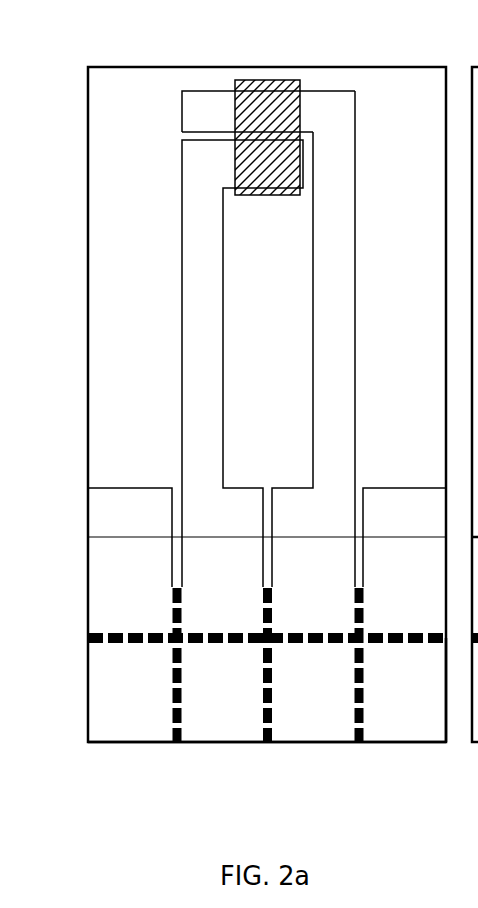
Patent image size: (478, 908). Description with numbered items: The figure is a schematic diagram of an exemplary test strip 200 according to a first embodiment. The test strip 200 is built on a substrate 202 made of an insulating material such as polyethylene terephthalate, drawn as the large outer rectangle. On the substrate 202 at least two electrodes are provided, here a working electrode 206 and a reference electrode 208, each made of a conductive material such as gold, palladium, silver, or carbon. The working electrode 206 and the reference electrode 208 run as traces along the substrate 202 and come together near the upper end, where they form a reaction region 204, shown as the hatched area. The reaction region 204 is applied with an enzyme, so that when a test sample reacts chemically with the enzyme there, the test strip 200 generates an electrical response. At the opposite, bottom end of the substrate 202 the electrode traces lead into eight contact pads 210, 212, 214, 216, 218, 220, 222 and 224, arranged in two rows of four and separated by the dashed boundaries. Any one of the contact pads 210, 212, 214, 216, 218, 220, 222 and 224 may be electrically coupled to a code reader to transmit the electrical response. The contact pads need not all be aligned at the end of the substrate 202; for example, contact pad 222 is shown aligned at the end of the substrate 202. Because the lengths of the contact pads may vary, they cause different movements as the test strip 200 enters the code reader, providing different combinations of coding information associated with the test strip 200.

The test strip 200 is at (236, 31).
The substrate 202 is at (118, 118).
The reaction region 204 is at (267, 172).
The working electrode 206 is at (203, 303).
The reference electrode 208 is at (333, 386).
The contact pad 210 is at (132, 563).
The contact pad 212 is at (222, 587).
The contact pad 214 is at (313, 587).
The contact pad 216 is at (402, 563).
The contact pad 218 is at (132, 690).
The contact pad 220 is at (222, 690).
The contact pad 222 is at (313, 690).
The contact pad 224 is at (402, 690).